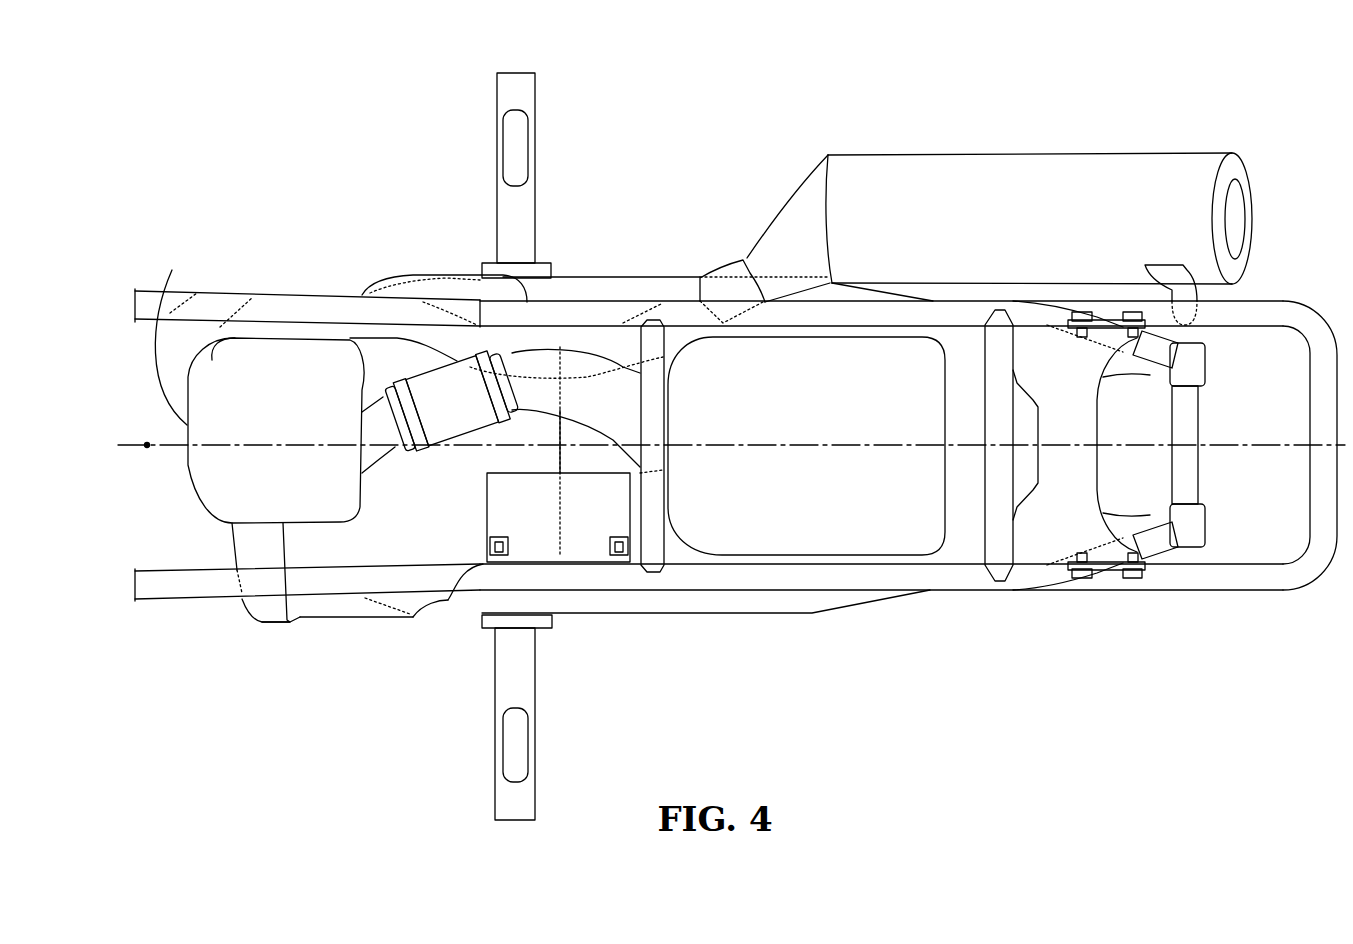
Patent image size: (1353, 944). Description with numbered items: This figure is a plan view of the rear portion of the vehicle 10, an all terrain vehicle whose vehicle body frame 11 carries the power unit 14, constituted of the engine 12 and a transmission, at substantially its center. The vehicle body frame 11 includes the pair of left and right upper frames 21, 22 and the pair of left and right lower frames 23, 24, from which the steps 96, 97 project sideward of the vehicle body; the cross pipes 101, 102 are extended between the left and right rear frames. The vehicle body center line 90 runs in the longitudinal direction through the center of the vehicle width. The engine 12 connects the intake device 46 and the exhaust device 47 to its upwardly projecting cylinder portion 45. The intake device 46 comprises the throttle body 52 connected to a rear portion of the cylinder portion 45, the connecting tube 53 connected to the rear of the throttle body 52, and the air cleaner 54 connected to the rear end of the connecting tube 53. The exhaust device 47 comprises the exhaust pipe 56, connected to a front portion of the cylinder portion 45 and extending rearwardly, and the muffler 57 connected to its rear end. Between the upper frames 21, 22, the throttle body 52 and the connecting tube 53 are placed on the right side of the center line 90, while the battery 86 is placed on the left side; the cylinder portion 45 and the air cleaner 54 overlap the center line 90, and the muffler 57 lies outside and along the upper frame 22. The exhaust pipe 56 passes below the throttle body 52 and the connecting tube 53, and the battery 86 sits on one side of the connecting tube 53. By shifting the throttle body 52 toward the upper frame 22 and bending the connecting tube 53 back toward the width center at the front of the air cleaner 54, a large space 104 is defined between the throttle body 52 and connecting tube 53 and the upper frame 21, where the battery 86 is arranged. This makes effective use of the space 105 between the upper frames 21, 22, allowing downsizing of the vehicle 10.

The vehicle 10 is at (243, 134).
The vehicle body frame 11 is at (307, 299).
The engine 12 is at (253, 367).
The power unit 14 is at (261, 624).
The upper frame 21 is at (192, 591).
The upper frame 22 is at (163, 300).
The lower frame 23 is at (703, 607).
The lower frame 24 is at (665, 292).
The cylinder portion 45 is at (288, 623).
The intake device 46 is at (426, 452).
The exhaust device 47 is at (729, 257).
The throttle body 52 is at (433, 380).
The connecting tube 53 is at (612, 350).
The air cleaner 54 is at (813, 537).
The exhaust pipe 56 is at (457, 315).
The muffler 57 is at (1042, 175).
The battery 86 is at (590, 540).
The vehicle body center line 90 is at (147, 443).
The step 96 is at (520, 813).
The step 97 is at (515, 84).
The cross pipe 101 is at (651, 548).
The cross pipe 102 is at (998, 582).
The space 104 is at (458, 510).
The space 105 is at (382, 545).